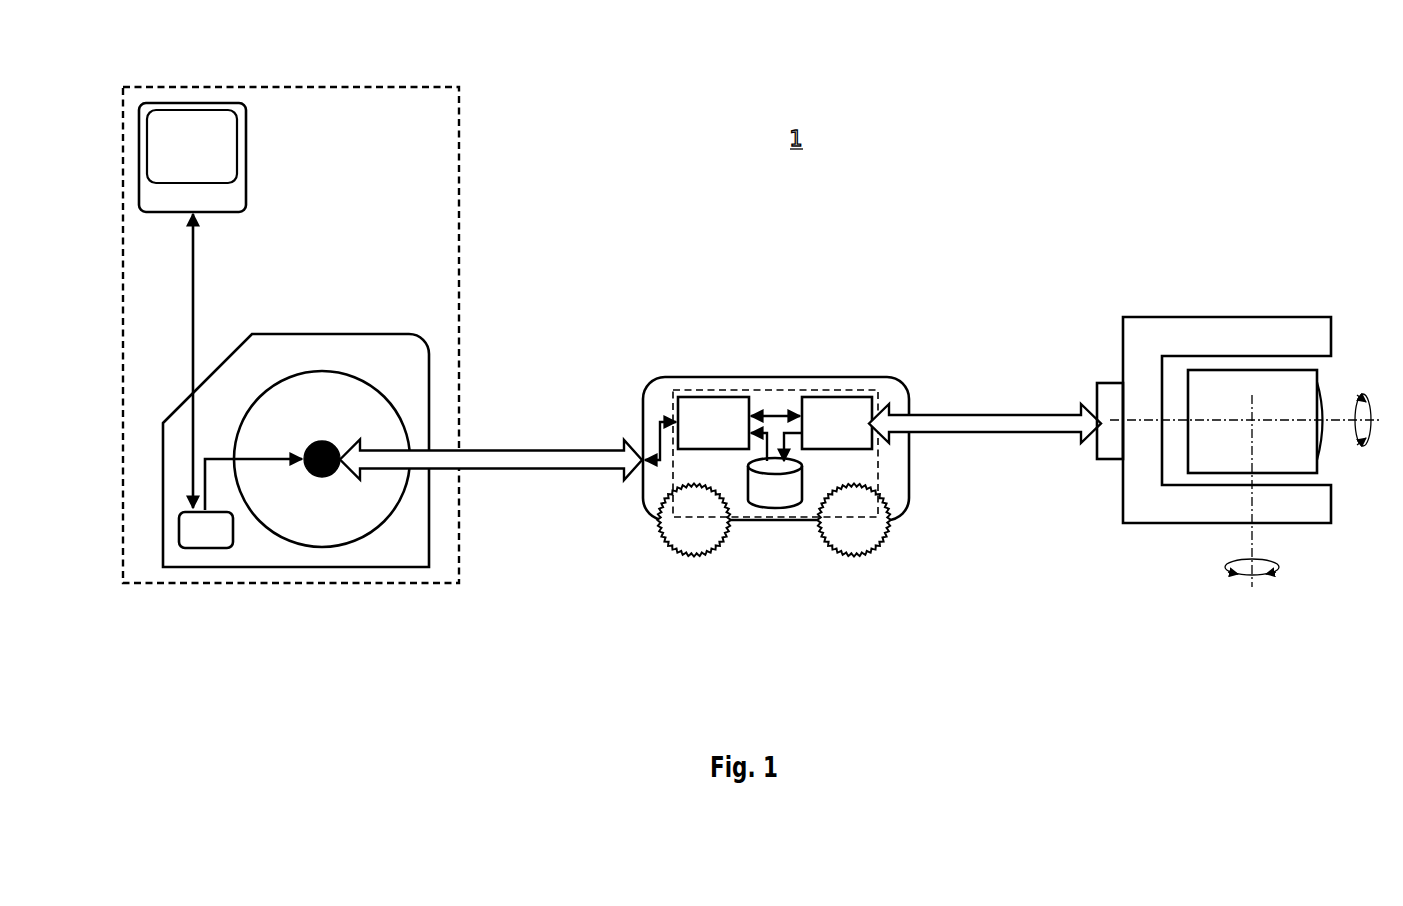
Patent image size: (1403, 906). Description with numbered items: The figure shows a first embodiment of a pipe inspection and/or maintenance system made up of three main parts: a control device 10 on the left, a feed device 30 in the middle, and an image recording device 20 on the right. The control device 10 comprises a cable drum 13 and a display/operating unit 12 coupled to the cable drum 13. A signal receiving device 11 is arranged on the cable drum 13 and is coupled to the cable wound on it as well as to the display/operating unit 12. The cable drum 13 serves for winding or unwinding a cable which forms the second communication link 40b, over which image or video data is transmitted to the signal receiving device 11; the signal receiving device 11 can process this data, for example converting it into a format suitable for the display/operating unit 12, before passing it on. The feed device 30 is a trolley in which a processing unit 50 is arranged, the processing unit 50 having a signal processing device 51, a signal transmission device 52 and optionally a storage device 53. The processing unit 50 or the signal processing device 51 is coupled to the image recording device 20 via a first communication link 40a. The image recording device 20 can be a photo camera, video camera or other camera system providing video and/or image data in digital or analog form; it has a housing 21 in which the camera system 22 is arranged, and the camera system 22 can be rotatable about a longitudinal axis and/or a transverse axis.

The control device 10 is at (461, 172).
The signal receiving device 11 is at (213, 552).
The display/operating unit 12 is at (245, 105).
The cable drum 13 is at (394, 402).
The image recording device 20 is at (1169, 297).
The housing 21 is at (1211, 316).
The camera system 22 is at (1283, 376).
The feed device 30 is at (675, 356).
The first communication link 40a is at (1012, 408).
The second communication link 40b is at (543, 447).
The processing unit 50 is at (776, 386).
The signal processing device 51 is at (846, 395).
The signal transmission device 52 is at (721, 393).
The storage device 53 is at (781, 505).